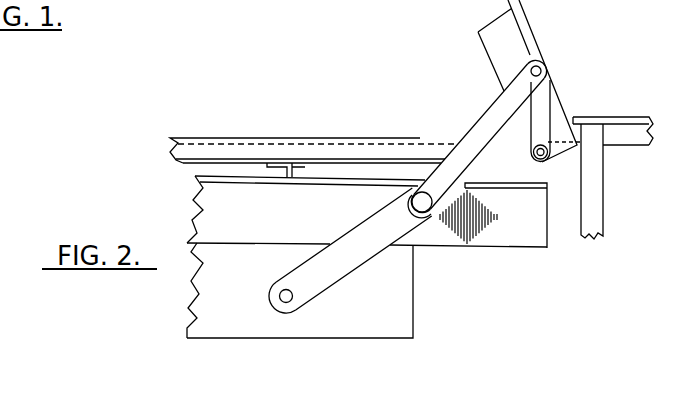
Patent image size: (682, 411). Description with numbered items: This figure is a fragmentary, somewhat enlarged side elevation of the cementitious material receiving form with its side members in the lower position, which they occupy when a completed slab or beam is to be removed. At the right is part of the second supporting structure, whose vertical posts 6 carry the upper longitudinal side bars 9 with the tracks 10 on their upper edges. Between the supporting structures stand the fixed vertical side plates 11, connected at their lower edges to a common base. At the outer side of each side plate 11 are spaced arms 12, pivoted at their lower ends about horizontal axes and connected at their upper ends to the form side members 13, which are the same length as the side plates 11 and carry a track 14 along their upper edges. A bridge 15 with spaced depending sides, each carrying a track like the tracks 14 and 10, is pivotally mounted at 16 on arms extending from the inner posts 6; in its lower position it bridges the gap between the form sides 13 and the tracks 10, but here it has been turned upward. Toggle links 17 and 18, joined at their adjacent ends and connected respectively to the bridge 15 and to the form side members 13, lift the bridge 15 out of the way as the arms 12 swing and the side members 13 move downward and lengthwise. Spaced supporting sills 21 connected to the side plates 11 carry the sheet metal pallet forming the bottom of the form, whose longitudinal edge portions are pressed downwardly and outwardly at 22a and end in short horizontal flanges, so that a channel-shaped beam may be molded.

The vertical posts 6 is at (585, 213).
The upper longitudinal side bars 9 is at (630, 150).
The tracks 10 is at (610, 117).
The vertical side plates 11 is at (178, 290).
The arms 12 is at (342, 267).
The form side members 13 is at (283, 283).
The track 14 is at (248, 180).
The bridge 15 is at (515, 55).
The pivot 16 is at (538, 167).
The toggle link 17 is at (540, 110).
The toggle link 18 is at (480, 142).
The supporting sills 21 is at (303, 167).
The pressed edge portion of pallet 22a is at (190, 150).